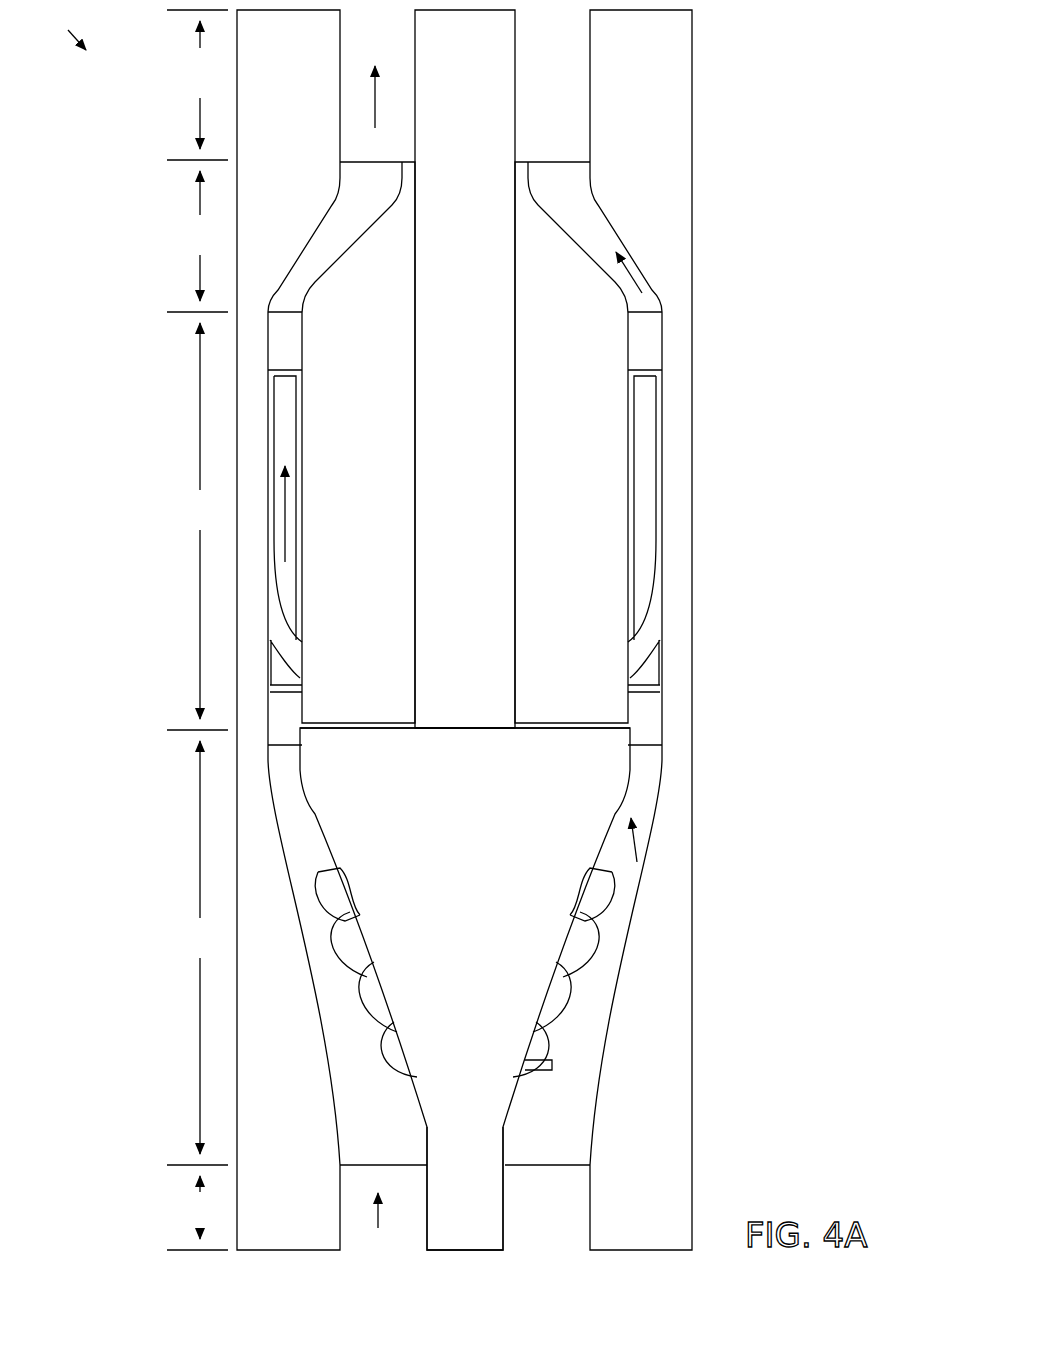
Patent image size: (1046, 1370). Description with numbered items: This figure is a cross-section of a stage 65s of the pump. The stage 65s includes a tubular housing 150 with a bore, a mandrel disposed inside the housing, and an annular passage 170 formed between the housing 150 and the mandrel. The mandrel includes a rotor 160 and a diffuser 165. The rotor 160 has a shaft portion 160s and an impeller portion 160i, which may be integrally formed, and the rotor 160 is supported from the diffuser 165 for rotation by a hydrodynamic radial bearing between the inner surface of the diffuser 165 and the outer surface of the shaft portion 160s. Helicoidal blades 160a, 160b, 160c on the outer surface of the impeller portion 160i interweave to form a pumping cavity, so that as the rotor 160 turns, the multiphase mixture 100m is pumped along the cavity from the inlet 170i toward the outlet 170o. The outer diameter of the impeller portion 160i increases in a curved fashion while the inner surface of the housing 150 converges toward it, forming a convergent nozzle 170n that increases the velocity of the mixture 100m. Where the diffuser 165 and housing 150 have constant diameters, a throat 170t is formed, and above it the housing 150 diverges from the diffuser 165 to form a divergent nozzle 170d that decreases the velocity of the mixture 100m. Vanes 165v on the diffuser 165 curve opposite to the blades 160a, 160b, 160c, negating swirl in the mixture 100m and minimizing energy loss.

The stage 65s is at (69, 29).
The housing 150 is at (692, 990).
The rotor 160 is at (509, 1240).
The shaft portion 160s is at (487, 500).
The impeller portion 160i is at (487, 851).
The helicoidal blade 160a is at (535, 1070).
The helicoidal blade 160b is at (560, 1023).
The helicoidal blade 160c is at (600, 879).
The diffuser 165 is at (596, 440).
The vane 165v is at (656, 412).
The annular passage 170 is at (567, 100).
The outlet 170o is at (197, 85).
The divergent nozzle 170d is at (197, 241).
The throat 170t is at (197, 526).
The convergent nozzle 170n is at (197, 953).
The inlet 170i is at (197, 1213).
The multiphase mixture 100m is at (380, 1188).